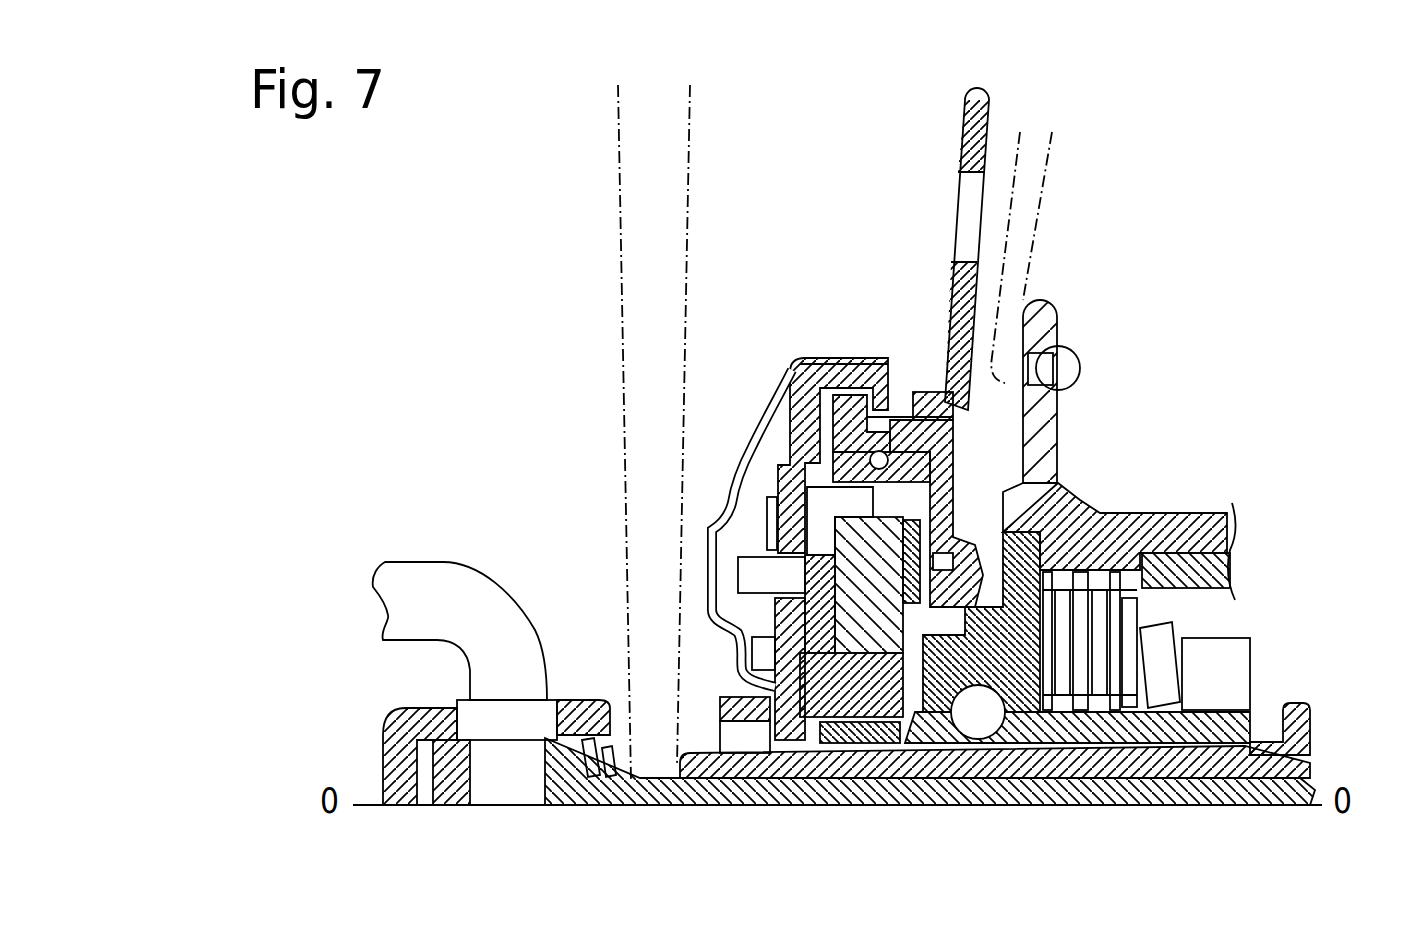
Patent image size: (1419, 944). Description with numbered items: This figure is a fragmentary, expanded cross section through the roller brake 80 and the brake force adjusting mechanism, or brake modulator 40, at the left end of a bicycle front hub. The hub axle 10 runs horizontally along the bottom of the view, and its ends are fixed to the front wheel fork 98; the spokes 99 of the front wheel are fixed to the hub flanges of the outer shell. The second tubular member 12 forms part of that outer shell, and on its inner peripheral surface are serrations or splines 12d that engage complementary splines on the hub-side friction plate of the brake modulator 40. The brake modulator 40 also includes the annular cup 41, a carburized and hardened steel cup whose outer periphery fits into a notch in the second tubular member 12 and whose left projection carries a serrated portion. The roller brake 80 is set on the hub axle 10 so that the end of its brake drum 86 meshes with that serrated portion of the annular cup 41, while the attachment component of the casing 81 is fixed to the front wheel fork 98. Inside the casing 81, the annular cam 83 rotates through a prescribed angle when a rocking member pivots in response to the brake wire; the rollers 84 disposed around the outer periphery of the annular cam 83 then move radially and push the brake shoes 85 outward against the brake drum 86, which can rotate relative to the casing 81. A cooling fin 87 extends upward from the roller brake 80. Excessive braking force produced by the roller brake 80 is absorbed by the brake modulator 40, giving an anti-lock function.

The hub axle 10 is at (650, 790).
The second tubular member 12 is at (1062, 310).
The serrations or splines 12d is at (1060, 445).
The brake modulator 40 is at (1273, 623).
The annular cup 41 is at (1033, 720).
The roller brake 80 is at (838, 333).
The casing 81 is at (759, 429).
The annular cam 83 is at (822, 690).
The rollers 84 is at (885, 620).
The brake shoes 85 is at (958, 462).
The brake drum 86 is at (963, 438).
The cooling fin 87 is at (965, 112).
The front wheel fork 98 is at (620, 212).
The spokes 99 is at (1040, 207).